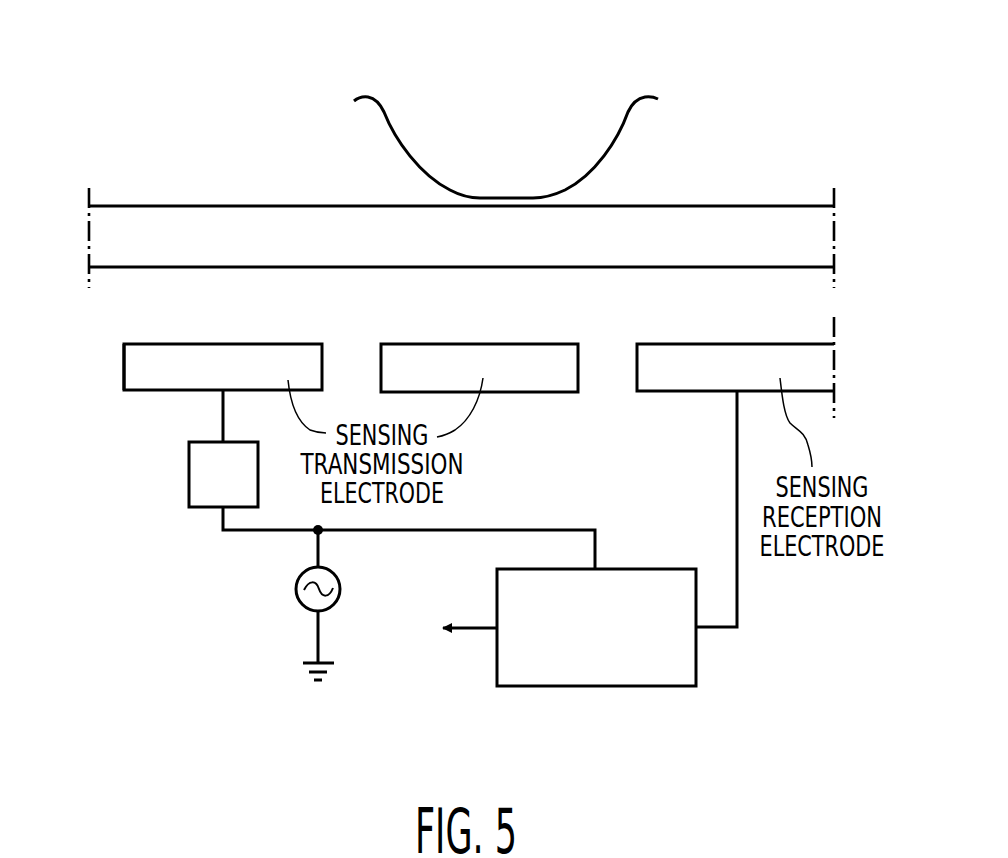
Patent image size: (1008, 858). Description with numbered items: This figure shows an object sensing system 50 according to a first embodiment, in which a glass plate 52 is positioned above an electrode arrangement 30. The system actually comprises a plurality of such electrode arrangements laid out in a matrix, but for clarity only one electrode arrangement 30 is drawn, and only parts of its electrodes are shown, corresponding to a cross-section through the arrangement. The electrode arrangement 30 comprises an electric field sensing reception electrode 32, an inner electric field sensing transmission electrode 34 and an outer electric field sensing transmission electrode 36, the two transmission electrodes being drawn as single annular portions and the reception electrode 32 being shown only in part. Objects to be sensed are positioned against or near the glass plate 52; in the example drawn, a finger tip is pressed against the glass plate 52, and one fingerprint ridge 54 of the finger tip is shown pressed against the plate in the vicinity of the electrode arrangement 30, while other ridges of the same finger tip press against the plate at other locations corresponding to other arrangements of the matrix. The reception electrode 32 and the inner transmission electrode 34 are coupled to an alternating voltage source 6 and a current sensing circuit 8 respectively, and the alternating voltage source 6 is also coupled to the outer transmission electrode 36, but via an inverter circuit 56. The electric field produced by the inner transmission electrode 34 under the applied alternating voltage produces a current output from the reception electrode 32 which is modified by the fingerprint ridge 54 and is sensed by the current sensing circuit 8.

The object sensing system 50 is at (184, 132).
The glass plate 52 is at (725, 206).
The fingerprint ridge 54 is at (630, 110).
The electrode arrangement 30 is at (104, 361).
The outer electric field sensing transmission electrode 36 is at (122, 384).
The inner electric field sensing transmission electrode 34 is at (540, 393).
The electric field sensing reception electrode 32 is at (677, 344).
The inverter circuit 56 is at (188, 486).
The alternating voltage source 6 is at (294, 588).
The current sensing circuit 8 is at (696, 668).